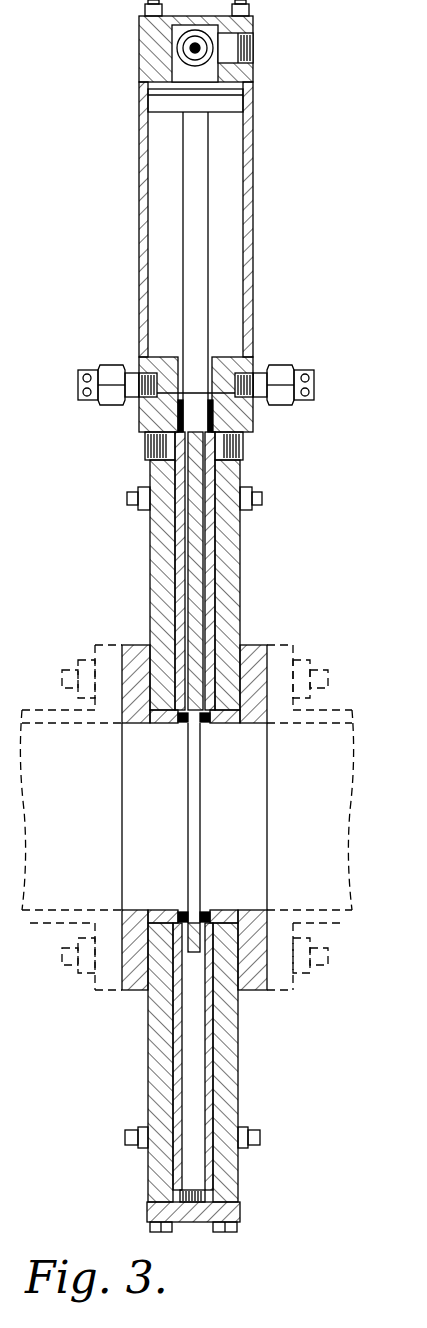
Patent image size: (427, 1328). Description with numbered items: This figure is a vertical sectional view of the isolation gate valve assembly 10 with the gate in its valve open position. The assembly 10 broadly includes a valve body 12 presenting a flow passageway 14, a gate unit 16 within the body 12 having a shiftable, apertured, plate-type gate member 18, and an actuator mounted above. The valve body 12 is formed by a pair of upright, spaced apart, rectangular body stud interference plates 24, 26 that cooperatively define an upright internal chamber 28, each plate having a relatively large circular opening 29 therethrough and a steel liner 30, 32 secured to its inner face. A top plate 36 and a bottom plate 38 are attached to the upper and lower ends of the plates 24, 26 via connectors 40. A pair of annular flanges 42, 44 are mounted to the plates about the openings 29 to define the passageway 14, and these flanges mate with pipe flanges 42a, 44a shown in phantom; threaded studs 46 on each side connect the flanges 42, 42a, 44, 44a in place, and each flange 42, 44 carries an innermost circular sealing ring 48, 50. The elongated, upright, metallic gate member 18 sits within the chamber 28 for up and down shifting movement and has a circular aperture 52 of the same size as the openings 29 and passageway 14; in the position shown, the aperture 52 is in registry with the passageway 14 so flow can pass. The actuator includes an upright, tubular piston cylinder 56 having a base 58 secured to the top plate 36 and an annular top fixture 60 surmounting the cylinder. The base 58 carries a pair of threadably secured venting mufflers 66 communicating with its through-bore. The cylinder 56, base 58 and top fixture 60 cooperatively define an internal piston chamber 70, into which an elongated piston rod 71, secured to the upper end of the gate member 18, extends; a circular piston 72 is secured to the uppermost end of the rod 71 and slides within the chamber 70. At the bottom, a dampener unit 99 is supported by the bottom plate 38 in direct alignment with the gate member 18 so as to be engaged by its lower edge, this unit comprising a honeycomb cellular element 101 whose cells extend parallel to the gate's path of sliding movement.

The isolation gate valve assembly 10 is at (313, 63).
The valve body 12 is at (306, 342).
The flow passageway 14 is at (248, 736).
The gate unit 16 is at (228, 165).
The gate member 18 is at (200, 578).
The body stud interference plate 24 is at (243, 532).
The body stud interference plate 26 is at (155, 1085).
The internal chamber 28 is at (195, 1067).
The circular opening 29 is at (150, 910).
The steel liner 30 is at (212, 1125).
The steel liner 32 is at (175, 1165).
The top plate 36 is at (253, 432).
The bottom plate 38 is at (190, 1226).
The connectors 40 is at (232, 1234).
The annular flange 42 is at (131, 990).
The pipe flange 42a is at (95, 995).
The annular flange 44 is at (262, 990).
The pipe flange 44a is at (300, 978).
The threaded studs 46 is at (85, 965).
The sealing ring 48 is at (182, 912).
The sealing ring 50 is at (205, 912).
The aperture 52 is at (195, 800).
The piston cylinder 56 is at (143, 245).
The base 58 is at (140, 408).
The top fixture 60 is at (148, 40).
The venting mufflers 66 is at (108, 365).
The piston chamber 70 is at (234, 208).
The piston rod 71 is at (202, 248).
The piston 72 is at (235, 100).
The dampener unit 99 is at (196, 1176).
The honeycomb cellular element 101 is at (165, 1195).